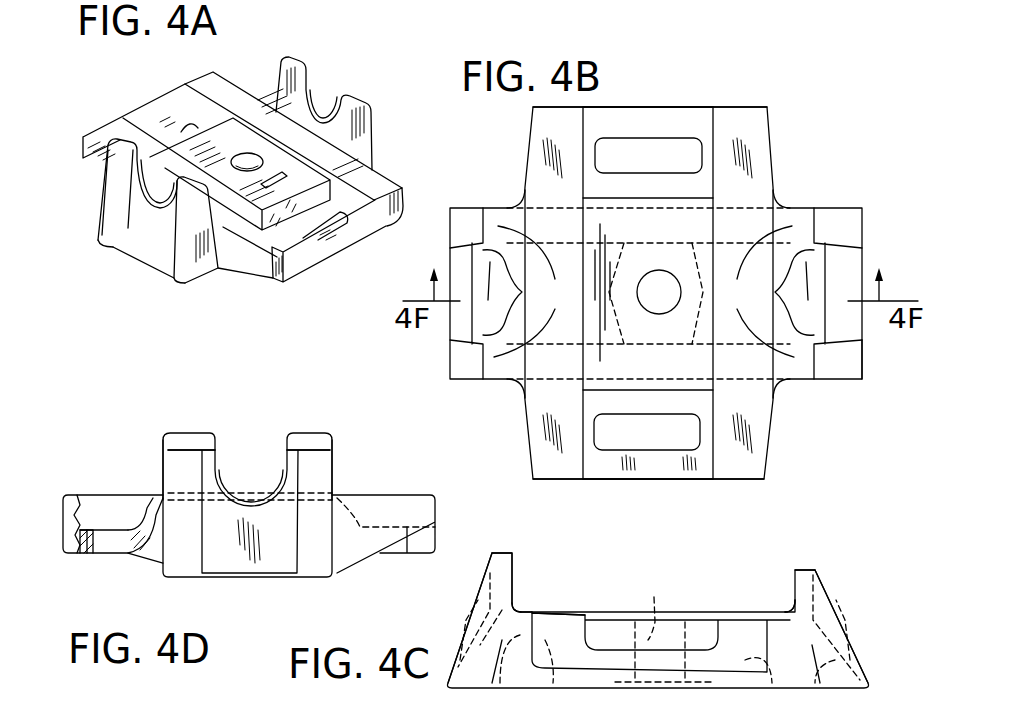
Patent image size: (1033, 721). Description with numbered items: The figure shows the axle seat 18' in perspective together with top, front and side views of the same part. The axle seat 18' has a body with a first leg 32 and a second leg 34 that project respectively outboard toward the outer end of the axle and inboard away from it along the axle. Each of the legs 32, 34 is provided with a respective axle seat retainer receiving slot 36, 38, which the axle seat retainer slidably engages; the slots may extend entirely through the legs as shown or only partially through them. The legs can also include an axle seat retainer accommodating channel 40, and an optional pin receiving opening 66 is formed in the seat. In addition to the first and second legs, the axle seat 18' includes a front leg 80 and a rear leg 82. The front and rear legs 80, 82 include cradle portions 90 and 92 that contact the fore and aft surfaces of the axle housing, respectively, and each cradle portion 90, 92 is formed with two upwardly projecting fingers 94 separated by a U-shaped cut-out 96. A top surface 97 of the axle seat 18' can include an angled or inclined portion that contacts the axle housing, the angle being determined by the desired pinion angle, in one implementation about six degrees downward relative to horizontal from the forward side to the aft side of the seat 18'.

In FIG. 4A, the axle seat 18' is at (103, 296).
In FIG. 4B, the axle seat 18' is at (484, 412).
In FIG. 4D, the axle seat 18' is at (120, 427).
In FIG. 4C, the axle seat 18' is at (380, 703).
In FIG. 4A, the first leg 32 is at (163, 123).
In FIG. 4B, the first leg 32 is at (675, 106).
In FIG. 4D, the first leg 32 is at (63, 530).
In FIG. 4A, the second leg 34 is at (307, 252).
In FIG. 4B, the second leg 34 is at (600, 479).
In FIG. 4D, the second leg 34 is at (435, 533).
In FIG. 4A, the axle seat retainer receiving slot 36 is at (320, 217).
In FIG. 4B, the axle seat retainer receiving slot 36 is at (666, 448).
In FIG. 4D, the axle seat retainer receiving slot 36 is at (373, 530).
In FIG. 4A, the axle seat retainer receiving slot 38 is at (178, 133).
In FIG. 4B, the axle seat retainer receiving slot 38 is at (663, 140).
In FIG. 4D, the axle seat retainer receiving slot 38 is at (97, 540).
In FIG. 4A, the axle seat retainer accommodating channel 40 is at (163, 122).
In FIG. 4B, the axle seat retainer accommodating channel 40 is at (640, 120).
In FIG. 4D, the axle seat retainer accommodating channel 40 is at (87, 530).
In FIG. 4A, the pin receiving opening 66 is at (245, 162).
In FIG. 4B, the pin receiving opening 66 is at (657, 287).
In FIG. 4C, the pin receiving opening 66 is at (654, 606).
In FIG. 4A, the front leg 80 is at (172, 273).
In FIG. 4B, the front leg 80 is at (475, 208).
In FIG. 4D, the front leg 80 is at (265, 578).
In FIG. 4C, the front leg 80 is at (658, 620).
In FIG. 4A, the rear leg 82 is at (392, 170).
In FIG. 4B, the rear leg 82 is at (844, 379).
In FIG. 4A, the cradle portion 90 is at (297, 60).
In FIG. 4B, the cradle portion 90 is at (770, 291).
In FIG. 4D, the cradle portion 90 is at (317, 433).
In FIG. 4C, the cradle portion 90 is at (807, 570).
In FIG. 4A, the cradle portion 92 is at (153, 128).
In FIG. 4B, the cradle portion 92 is at (525, 291).
In FIG. 4D, the cradle portion 92 is at (307, 450).
In FIG. 4C, the cradle portion 92 is at (512, 552).
In FIG. 4A, the upwardly projecting finger 94 is at (112, 202).
In FIG. 4D, the upwardly projecting finger 94 is at (177, 480).
In FIG. 4C, the upwardly projecting finger 94 is at (467, 627).
In FIG. 4A, the U-shaped cut-out 96 is at (135, 187).
In FIG. 4B, the U-shaped cut-out 96 is at (496, 287).
In FIG. 4D, the U-shaped cut-out 96 is at (240, 497).
In FIG. 4C, the U-shaped cut-out 96 is at (512, 592).
In FIG. 4C, the top surface 97 is at (582, 613).